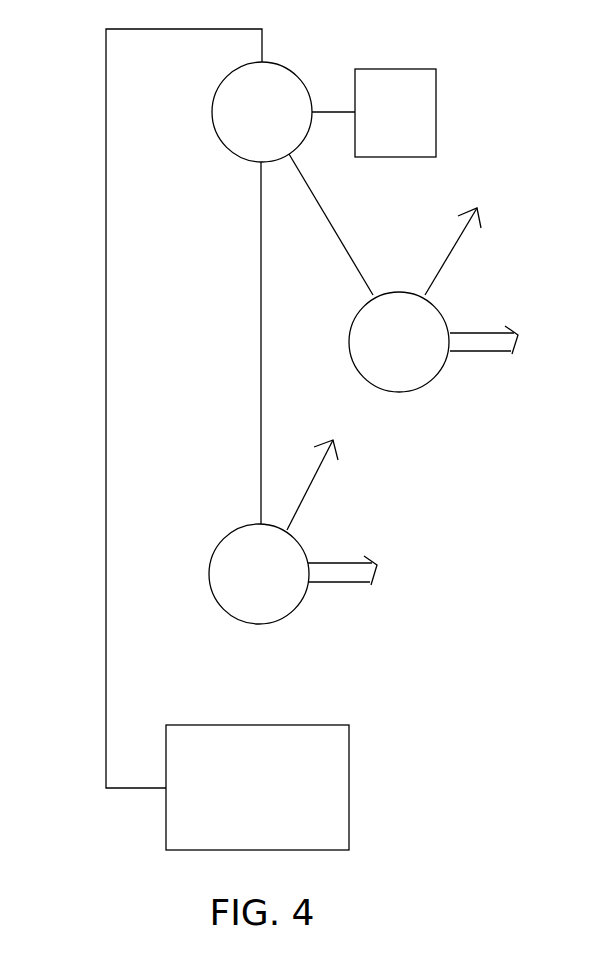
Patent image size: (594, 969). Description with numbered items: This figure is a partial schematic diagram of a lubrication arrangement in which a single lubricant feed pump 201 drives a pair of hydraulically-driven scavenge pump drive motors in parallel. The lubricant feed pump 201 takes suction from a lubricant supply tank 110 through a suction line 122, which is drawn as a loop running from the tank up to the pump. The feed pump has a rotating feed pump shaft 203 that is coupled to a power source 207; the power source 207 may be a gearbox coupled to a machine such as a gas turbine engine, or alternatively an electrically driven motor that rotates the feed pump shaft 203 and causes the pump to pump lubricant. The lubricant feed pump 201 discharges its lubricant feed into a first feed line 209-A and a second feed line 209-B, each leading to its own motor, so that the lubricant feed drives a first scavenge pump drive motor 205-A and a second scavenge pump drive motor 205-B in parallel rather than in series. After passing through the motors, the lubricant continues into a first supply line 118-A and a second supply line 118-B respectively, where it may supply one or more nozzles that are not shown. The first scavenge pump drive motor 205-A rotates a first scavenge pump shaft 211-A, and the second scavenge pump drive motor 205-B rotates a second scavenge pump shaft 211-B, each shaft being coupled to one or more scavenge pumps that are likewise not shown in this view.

The lubricant supply tank 110 is at (244, 799).
The suction line 122 is at (106, 527).
The lubricant feed pump 201 is at (245, 123).
The feed pump shaft 203 is at (330, 112).
The power source 207 is at (375, 124).
The first feed line 209-A is at (323, 213).
The second feed line 209-B is at (260, 340).
The first scavenge pump drive motor 205-A is at (372, 353).
The second scavenge pump drive motor 205-B is at (232, 585).
The first supply line 118-A is at (448, 253).
The second supply line 118-B is at (310, 487).
The first scavenge pump shaft 211-A is at (482, 342).
The second scavenge pump shaft 211-B is at (340, 575).